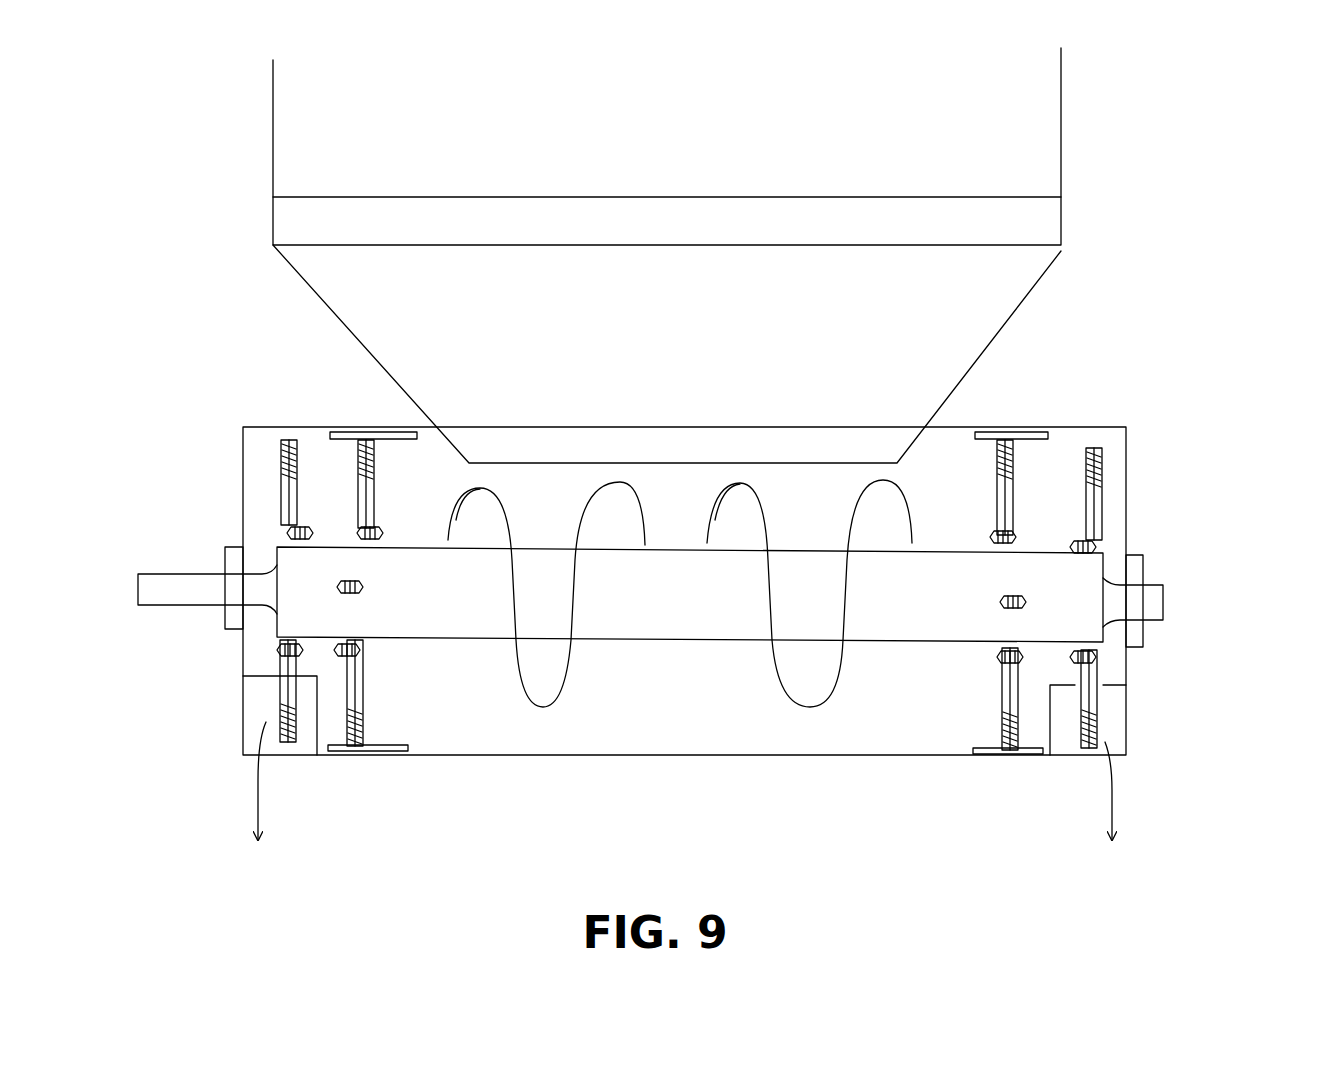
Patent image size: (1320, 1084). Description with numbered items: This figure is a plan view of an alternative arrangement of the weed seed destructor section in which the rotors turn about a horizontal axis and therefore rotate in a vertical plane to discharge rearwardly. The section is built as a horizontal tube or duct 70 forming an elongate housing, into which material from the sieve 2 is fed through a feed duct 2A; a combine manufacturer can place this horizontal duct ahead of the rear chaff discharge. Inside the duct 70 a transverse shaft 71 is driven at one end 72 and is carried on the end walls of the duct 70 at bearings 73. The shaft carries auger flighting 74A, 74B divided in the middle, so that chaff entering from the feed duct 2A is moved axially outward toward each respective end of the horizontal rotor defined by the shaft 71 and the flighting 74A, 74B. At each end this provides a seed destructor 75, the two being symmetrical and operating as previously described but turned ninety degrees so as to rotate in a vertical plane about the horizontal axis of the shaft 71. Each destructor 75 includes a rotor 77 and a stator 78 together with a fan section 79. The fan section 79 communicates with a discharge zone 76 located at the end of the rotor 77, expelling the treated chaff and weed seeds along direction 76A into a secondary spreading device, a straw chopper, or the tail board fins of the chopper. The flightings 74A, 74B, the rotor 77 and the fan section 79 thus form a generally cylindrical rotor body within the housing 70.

The sieve 2 is at (748, 160).
The feed duct 2A is at (1006, 323).
The horizontal tube or duct 70 is at (873, 757).
The transverse shaft 71 is at (615, 615).
The driven end of shaft 72 is at (163, 585).
The bearings 73 is at (233, 556).
The auger flighting 74A is at (622, 477).
The auger flighting 74B is at (747, 484).
The seed destructor 75 is at (240, 400).
The discharge zone 76 is at (305, 748).
The discharge direction 76A is at (258, 796).
The rotor 77 is at (416, 444).
The stator 78 is at (384, 429).
The fan section 79 is at (270, 712).